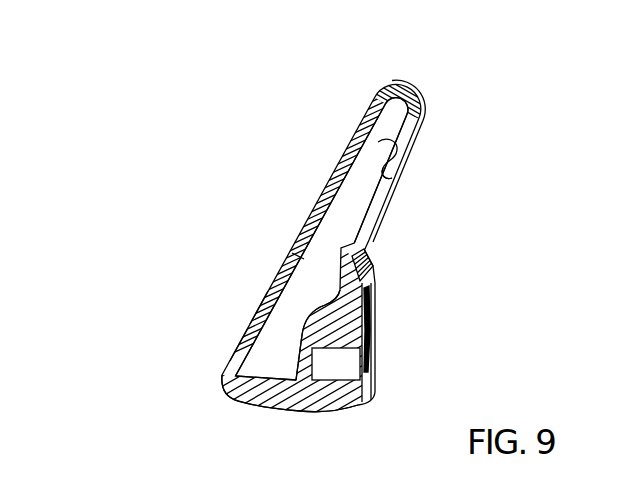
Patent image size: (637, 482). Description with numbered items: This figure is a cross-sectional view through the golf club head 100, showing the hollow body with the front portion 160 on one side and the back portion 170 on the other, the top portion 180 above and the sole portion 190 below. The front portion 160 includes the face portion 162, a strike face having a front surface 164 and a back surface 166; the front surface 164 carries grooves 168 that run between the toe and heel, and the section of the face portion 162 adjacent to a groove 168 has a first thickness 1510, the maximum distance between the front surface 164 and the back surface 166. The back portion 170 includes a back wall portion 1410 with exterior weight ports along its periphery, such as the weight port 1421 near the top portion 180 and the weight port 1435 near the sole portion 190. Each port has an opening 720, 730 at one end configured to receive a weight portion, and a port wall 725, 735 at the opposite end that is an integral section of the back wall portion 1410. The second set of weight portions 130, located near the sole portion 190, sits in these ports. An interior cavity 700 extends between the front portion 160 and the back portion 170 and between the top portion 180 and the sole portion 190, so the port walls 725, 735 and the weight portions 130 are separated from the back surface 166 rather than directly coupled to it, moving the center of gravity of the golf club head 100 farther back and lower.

The golf club head 100 is at (318, 241).
The front portion 160 is at (212, 190).
The face portion 162 is at (336, 170).
The front surface 164 is at (256, 314).
The back surface 166 is at (255, 343).
The groove 168 is at (237, 335).
The back portion 170 is at (388, 264).
The second set of weight portions 130 is at (383, 305).
The top portion 180 is at (400, 74).
The sole portion 190 is at (242, 428).
The interior cavity 700 is at (327, 232).
The opening 720 is at (422, 147).
The port wall 725 is at (428, 112).
The opening 730 is at (372, 375).
The port wall 735 is at (300, 370).
The back wall portion 1410 is at (380, 194).
The weight port 1421 is at (400, 160).
The weight port 1435 is at (330, 367).
The first thickness 1510 is at (292, 253).